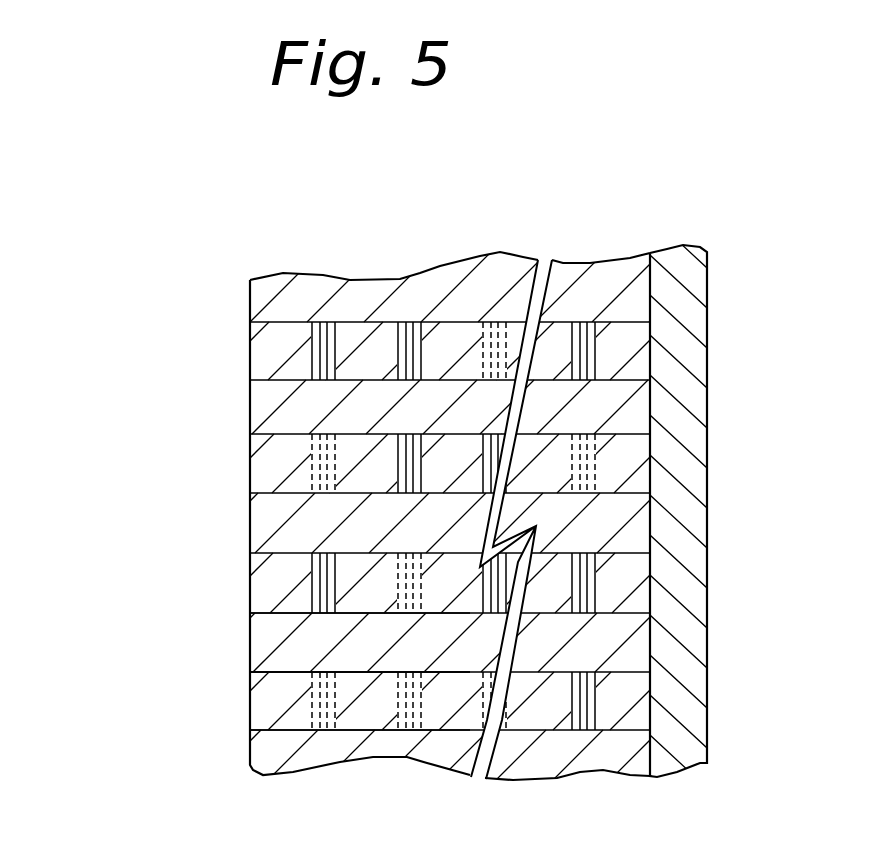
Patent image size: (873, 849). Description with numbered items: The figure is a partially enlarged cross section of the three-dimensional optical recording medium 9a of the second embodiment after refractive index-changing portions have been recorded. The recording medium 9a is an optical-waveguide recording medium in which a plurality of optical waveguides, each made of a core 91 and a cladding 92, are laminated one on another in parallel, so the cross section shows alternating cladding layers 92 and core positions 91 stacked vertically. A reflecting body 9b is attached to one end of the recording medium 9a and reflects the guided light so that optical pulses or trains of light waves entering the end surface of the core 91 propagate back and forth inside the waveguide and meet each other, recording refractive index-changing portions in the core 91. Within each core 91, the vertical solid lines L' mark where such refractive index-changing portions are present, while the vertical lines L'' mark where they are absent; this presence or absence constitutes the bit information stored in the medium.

The three-dimensional optical recording medium 9a is at (503, 252).
The reflecting body 9b is at (683, 248).
The cladding 92 is at (250, 638).
The core 91 is at (250, 703).
The vertical solid lines indicating presence of refractive index-changing portions L' is at (453, 513).
The vertical lines indicating absence of refractive index-changing portions L'' is at (370, 574).